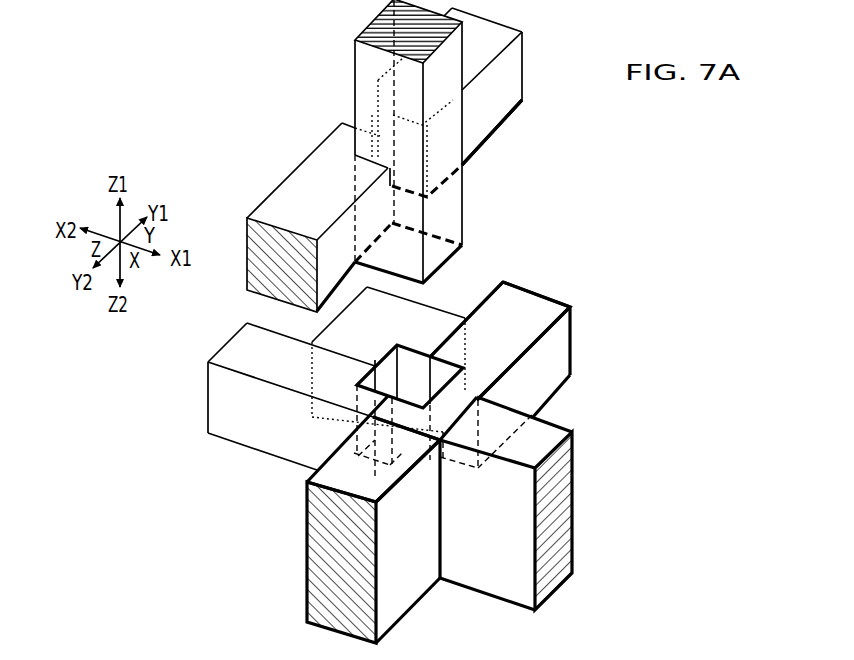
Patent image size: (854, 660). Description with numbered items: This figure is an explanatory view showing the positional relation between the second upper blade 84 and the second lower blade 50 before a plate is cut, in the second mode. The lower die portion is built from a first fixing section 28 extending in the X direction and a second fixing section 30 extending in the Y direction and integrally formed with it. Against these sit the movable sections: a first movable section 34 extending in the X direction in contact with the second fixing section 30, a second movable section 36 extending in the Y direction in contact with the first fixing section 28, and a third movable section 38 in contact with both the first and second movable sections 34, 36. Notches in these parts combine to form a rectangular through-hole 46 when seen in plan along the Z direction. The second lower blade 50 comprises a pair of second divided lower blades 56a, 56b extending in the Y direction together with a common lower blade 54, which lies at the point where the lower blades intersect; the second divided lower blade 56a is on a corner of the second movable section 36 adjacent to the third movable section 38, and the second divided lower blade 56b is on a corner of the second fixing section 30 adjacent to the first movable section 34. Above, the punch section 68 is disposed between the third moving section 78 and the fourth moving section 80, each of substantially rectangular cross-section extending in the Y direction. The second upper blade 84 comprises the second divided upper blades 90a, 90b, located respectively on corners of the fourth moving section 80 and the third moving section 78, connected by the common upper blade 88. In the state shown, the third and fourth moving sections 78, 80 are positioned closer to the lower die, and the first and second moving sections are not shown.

The first fixing section 28 is at (510, 584).
The second fixing section 30 is at (421, 581).
The first movable section 34 is at (230, 404).
The second movable section 36 is at (551, 300).
The third movable section 38 is at (340, 338).
The rectangular through-hole 46 is at (419, 380).
The second lower blade 50 is at (300, 482).
The common lower blade 54 is at (459, 381).
The second divided lower blade 56a is at (476, 303).
The second divided lower blade 56b is at (330, 442).
The punch section 68 is at (362, 84).
The third moving section 78 is at (297, 192).
The fourth moving section 80 is at (511, 80).
The second upper blade 84 is at (546, 132).
The common upper blade 88 is at (455, 262).
The second divided upper blade 90a is at (500, 128).
The second divided upper blade 90b is at (350, 292).